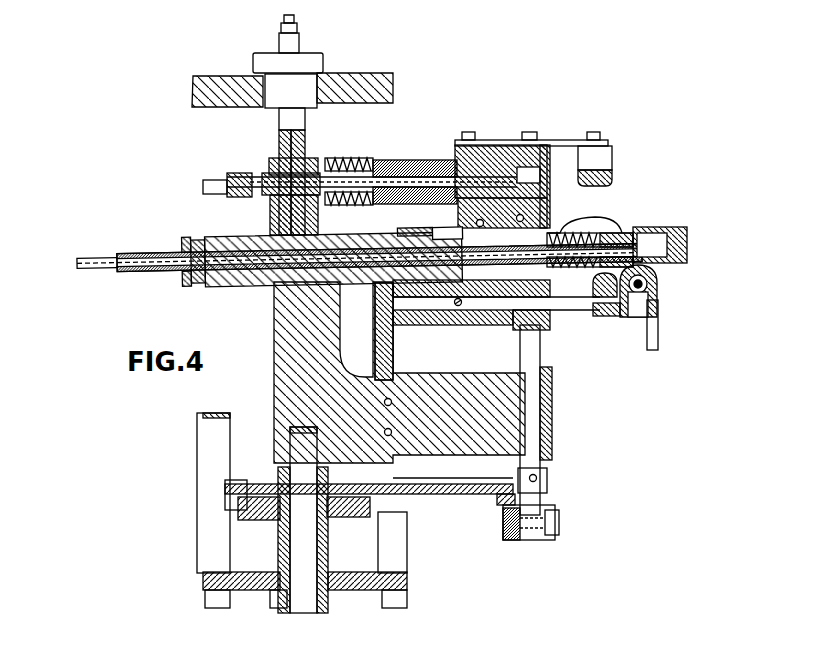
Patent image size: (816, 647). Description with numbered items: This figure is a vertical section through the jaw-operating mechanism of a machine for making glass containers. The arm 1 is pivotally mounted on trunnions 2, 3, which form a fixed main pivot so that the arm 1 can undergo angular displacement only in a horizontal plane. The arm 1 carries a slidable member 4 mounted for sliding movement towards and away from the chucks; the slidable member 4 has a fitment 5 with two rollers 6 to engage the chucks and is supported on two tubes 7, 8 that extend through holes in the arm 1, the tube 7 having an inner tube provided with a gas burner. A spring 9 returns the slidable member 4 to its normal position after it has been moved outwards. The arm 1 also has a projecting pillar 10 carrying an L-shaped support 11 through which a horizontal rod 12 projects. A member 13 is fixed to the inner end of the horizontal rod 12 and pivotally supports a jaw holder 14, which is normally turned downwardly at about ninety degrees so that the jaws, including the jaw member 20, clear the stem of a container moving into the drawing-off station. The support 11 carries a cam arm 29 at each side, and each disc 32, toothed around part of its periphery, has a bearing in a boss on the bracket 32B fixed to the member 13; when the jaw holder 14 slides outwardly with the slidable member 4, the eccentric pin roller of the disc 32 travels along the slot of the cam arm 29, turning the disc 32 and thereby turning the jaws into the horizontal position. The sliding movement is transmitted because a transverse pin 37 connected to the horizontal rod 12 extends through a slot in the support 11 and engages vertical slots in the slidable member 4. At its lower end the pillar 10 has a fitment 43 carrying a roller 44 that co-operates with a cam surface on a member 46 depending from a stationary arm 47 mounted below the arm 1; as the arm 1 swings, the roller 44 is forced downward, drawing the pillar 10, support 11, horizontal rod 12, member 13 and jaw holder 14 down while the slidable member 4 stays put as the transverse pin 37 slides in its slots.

The arm 1 is at (270, 377).
The trunnion 2 is at (292, 117).
The trunnion 3 is at (300, 527).
The slidable member 4 is at (487, 145).
The fitment 5 is at (565, 140).
The roller 6 is at (600, 172).
The tube 7 is at (447, 249).
The tube 8 is at (436, 162).
The spring 9 is at (403, 158).
The projecting pillar 10 is at (528, 345).
The L-shaped support 11 is at (461, 313).
The horizontal rod 12 is at (572, 298).
The member 13 is at (598, 316).
The jaw holder 14 is at (623, 316).
The jaw member 20 is at (655, 349).
The cam arm 29 is at (598, 222).
The disc 32 is at (637, 229).
The bracket 32B is at (655, 268).
The transverse pin 37 is at (451, 308).
The fitment 43 is at (545, 541).
The roller 44 is at (513, 541).
The member 46 is at (470, 494).
The stationary arm 47 is at (402, 490).